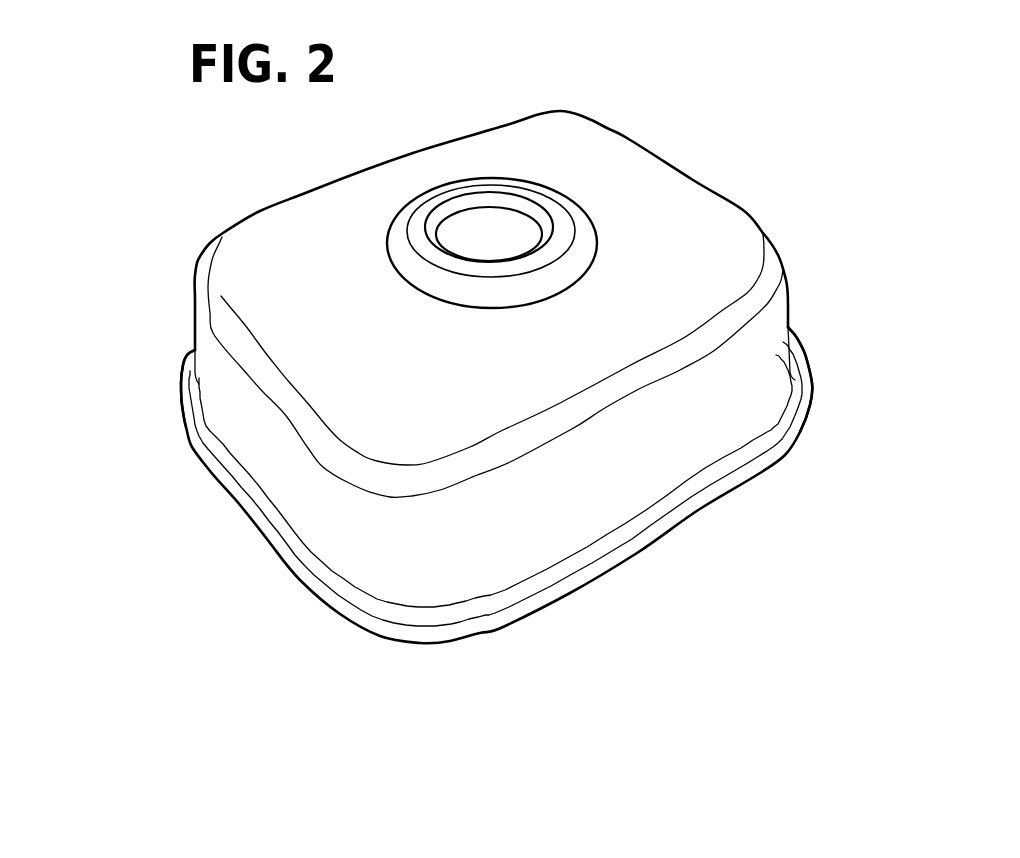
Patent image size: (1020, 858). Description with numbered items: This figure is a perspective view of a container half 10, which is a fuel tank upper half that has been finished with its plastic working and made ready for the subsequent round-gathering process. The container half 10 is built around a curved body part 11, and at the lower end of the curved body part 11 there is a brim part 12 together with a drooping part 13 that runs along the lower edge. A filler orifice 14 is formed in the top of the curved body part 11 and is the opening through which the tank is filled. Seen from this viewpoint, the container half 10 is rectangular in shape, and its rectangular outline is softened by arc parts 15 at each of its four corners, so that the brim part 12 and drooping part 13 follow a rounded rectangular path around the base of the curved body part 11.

The container half 10 is at (145, 222).
The curved body part 11 is at (298, 267).
The brim part 12 is at (323, 567).
The drooping part 13 is at (343, 607).
The filler orifice 14 is at (478, 203).
The arc parts 15 is at (598, 116).